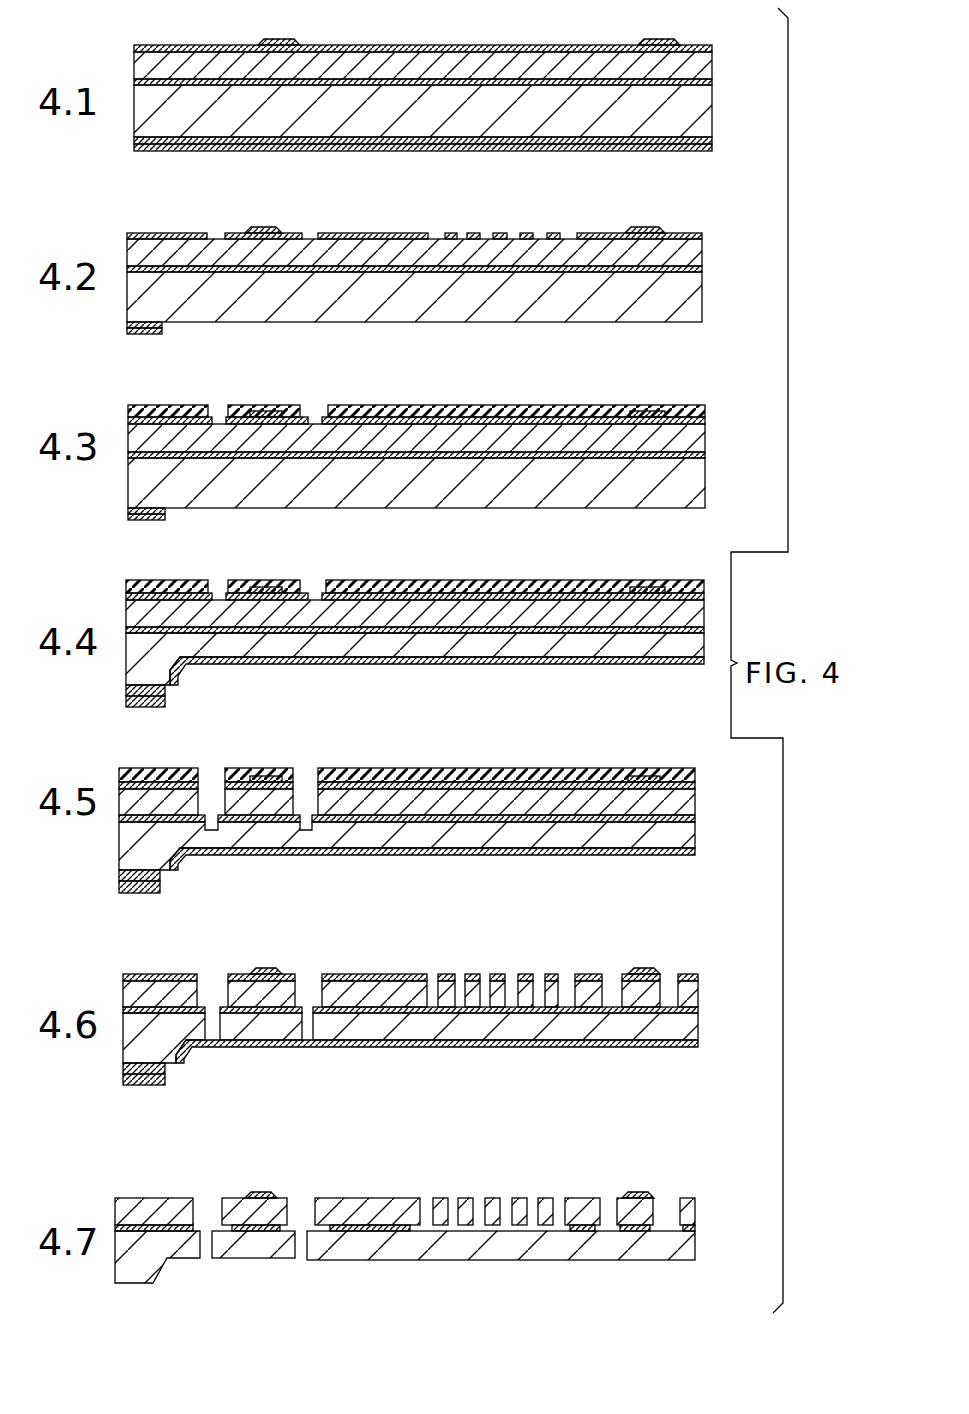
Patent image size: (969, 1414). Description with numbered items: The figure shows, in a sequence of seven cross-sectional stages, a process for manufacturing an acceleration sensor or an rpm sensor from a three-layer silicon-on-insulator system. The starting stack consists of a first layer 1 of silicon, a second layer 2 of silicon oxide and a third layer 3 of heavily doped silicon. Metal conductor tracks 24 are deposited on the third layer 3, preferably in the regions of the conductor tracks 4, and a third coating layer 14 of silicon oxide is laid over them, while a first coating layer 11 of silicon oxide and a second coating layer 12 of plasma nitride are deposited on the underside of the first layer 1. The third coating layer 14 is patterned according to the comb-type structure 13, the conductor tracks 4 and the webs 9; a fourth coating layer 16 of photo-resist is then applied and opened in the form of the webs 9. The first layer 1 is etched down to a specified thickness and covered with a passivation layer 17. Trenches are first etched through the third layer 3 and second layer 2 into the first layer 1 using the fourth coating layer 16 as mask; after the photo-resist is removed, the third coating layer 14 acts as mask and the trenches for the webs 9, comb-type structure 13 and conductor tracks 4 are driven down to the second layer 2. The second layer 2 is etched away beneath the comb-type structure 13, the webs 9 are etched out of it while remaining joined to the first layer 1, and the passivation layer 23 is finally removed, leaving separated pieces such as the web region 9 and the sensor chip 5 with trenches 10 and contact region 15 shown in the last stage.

The first layer 1 is at (698, 102).
The second layer 2 is at (712, 82).
The third layer 3 is at (705, 70).
The conductor tracks 4 is at (672, 972).
The sensor chip 5 is at (490, 1270).
The webs 9 is at (263, 1270).
The separation trench 10 is at (205, 1195).
The first coating layer 11 is at (705, 142).
The second coating layer 12 is at (708, 150).
The comb-type structure 13 is at (515, 208).
The third coating layer 14 is at (712, 46).
The contact region 15 is at (270, 226).
The fourth coating layer 16 is at (690, 408).
The passivation layer 17 is at (340, 857).
The passivation layer 23 is at (472, 668).
The metal conductor tracks 24 is at (292, 41).